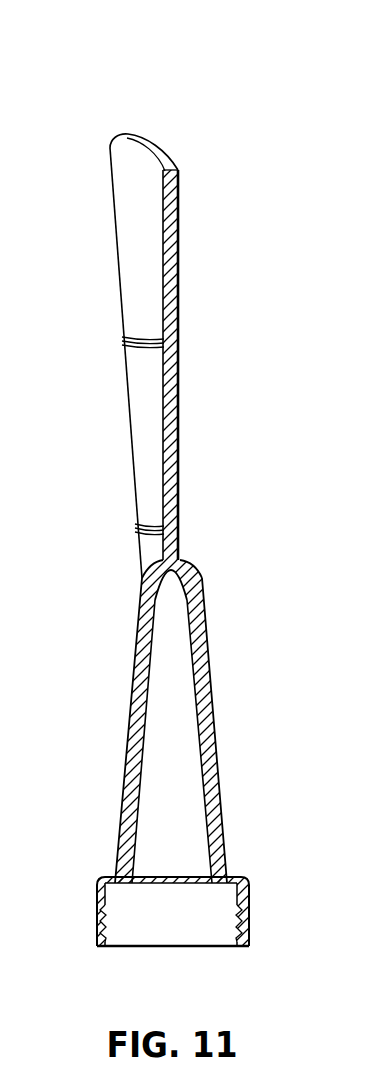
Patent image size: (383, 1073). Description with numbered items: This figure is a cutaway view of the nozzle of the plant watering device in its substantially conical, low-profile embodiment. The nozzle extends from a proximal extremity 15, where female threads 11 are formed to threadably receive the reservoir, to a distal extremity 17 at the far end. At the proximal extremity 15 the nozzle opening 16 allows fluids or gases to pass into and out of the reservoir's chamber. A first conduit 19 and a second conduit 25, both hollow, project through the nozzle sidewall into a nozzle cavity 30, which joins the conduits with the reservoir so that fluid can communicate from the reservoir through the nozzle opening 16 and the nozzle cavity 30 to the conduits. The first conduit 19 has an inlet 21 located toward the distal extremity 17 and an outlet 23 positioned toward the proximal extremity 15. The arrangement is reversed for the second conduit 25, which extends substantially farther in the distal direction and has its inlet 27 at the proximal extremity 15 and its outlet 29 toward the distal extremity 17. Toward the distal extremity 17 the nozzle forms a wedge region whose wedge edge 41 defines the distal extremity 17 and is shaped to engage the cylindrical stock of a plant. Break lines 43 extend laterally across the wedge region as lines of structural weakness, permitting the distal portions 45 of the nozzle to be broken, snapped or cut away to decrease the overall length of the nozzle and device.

The female threads 11 is at (107, 910).
The proximal extremity 15 is at (97, 943).
The nozzle opening 16 is at (195, 937).
The distal extremity 17 is at (115, 140).
The first conduit 19 is at (132, 762).
The inlet 21 is at (128, 768).
The outlet 23 is at (142, 775).
The second conduit 25 is at (142, 603).
The inlet 27 is at (157, 597).
The outlet 29 is at (142, 592).
The nozzle cavity 30 is at (155, 836).
The wedge edge 41 is at (167, 152).
The break lines 43 is at (168, 344).
The distal portions 45 is at (180, 263).